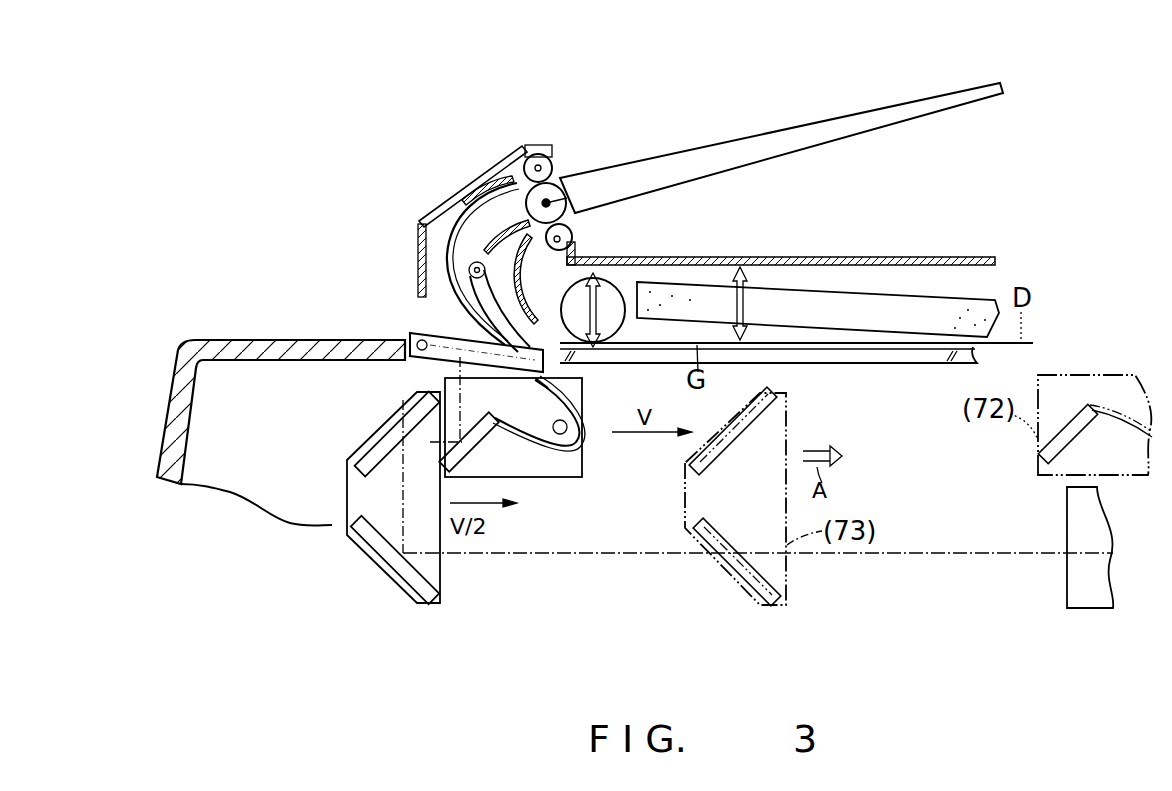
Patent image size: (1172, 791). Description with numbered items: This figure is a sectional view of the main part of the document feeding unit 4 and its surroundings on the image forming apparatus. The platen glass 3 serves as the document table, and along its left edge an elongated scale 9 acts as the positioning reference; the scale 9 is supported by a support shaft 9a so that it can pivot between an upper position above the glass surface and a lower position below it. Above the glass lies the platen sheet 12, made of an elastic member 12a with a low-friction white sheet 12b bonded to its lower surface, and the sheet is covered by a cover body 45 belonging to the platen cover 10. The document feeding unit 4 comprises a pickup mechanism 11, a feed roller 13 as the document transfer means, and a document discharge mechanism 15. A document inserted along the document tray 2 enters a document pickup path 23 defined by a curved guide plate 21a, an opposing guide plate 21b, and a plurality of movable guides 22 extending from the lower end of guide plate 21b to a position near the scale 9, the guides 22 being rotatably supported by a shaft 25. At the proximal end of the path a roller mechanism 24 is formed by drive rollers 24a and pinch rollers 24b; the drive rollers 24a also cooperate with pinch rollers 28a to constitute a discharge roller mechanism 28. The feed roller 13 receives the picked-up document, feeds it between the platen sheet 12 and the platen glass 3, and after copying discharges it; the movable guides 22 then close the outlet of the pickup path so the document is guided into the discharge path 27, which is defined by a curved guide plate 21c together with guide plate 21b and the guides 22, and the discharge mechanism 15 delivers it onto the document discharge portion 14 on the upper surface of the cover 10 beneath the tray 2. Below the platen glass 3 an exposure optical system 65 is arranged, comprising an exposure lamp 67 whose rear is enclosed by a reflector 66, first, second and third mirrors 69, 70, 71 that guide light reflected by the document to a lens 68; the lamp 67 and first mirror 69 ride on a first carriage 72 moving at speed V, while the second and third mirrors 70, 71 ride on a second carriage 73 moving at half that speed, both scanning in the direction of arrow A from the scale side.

The document tray 2 is at (838, 130).
The platen glass 3 is at (893, 360).
The document feeding unit 4 is at (710, 100).
The scale 9 is at (415, 337).
The support shaft 9a is at (416, 341).
The platen cover 10 is at (912, 257).
The pickup mechanism 11 is at (472, 162).
The platen sheet 12 is at (847, 296).
The elastic member 12a is at (785, 302).
The white sheet 12b is at (775, 335).
The feed roller 13 is at (610, 330).
The document discharge portion 14 is at (739, 216).
The document discharge mechanism 15 is at (600, 197).
The guide plate 21a is at (445, 215).
The guide plate 21b is at (480, 240).
The guide plate 21c is at (540, 383).
The movable guides 22 is at (462, 305).
The document pickup path 23 is at (470, 195).
The roller mechanism 24 is at (558, 158).
The drive rollers 24a is at (566, 176).
The pinch rollers 24b is at (530, 150).
The shaft 25 is at (468, 268).
The discharge path 27 is at (517, 308).
The discharge roller mechanism 28 is at (583, 235).
The pinch rollers 28a is at (572, 238).
The cover body 45 is at (968, 257).
The exposure optical system 65 is at (638, 556).
The reflector 66 is at (575, 420).
The exposure lamp 67 is at (562, 437).
The lens 68 is at (1090, 600).
The first mirror 69 is at (492, 433).
The second mirror 70 is at (370, 447).
The third mirror 71 is at (382, 556).
The first carriage 72 is at (580, 455).
The second carriage 73 is at (347, 462).